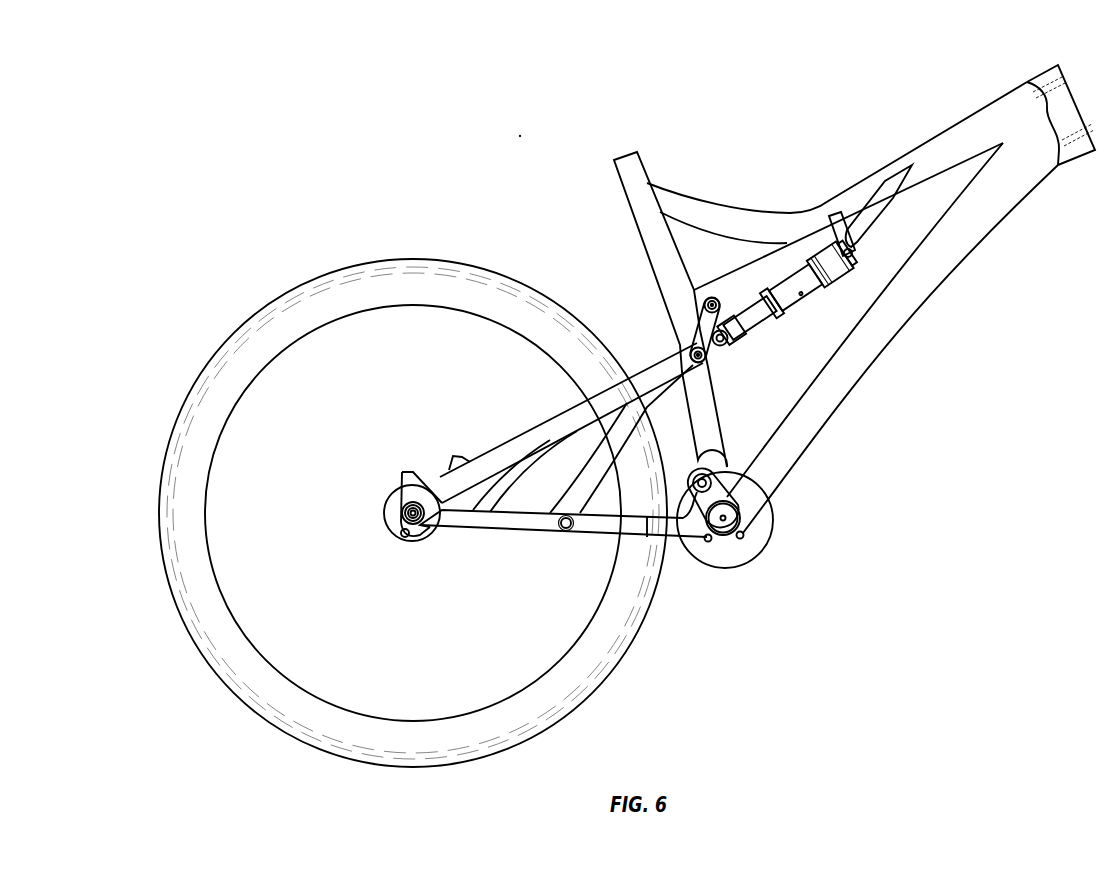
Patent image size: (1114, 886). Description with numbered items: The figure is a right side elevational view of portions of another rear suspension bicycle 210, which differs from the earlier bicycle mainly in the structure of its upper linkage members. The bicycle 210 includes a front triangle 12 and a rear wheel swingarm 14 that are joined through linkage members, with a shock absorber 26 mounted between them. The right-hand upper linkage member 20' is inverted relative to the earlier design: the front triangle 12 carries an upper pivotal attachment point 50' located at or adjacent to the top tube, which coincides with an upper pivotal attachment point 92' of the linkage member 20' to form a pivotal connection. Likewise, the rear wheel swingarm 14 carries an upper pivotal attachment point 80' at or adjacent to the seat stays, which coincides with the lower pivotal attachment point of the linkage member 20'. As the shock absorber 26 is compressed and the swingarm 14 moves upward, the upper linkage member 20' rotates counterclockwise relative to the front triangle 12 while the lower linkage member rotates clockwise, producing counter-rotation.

The bicycle 210 is at (522, 138).
The front triangle 12 is at (990, 328).
The rear wheel swingarm 14 is at (505, 560).
The shock absorber 26 is at (813, 293).
The right-hand upper pivotal attachment point of the front triangle 50' is at (704, 285).
The upper pivotal attachment point of the upper linkage member 92' is at (680, 330).
The right-hand upper linkage member 20' is at (748, 337).
The right-hand upper pivotal attachment point of the rear wheel swingarm 80' is at (722, 364).